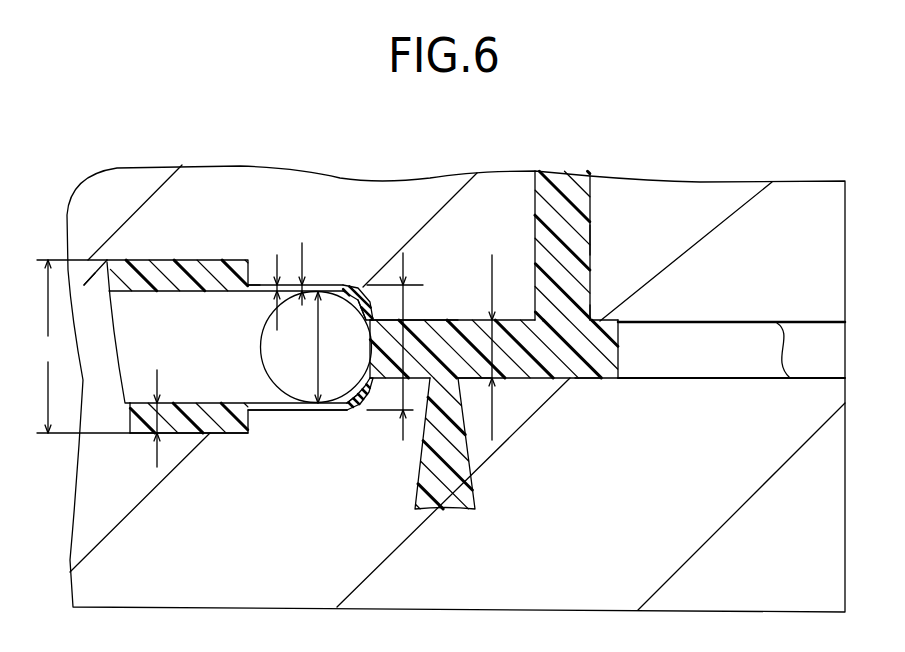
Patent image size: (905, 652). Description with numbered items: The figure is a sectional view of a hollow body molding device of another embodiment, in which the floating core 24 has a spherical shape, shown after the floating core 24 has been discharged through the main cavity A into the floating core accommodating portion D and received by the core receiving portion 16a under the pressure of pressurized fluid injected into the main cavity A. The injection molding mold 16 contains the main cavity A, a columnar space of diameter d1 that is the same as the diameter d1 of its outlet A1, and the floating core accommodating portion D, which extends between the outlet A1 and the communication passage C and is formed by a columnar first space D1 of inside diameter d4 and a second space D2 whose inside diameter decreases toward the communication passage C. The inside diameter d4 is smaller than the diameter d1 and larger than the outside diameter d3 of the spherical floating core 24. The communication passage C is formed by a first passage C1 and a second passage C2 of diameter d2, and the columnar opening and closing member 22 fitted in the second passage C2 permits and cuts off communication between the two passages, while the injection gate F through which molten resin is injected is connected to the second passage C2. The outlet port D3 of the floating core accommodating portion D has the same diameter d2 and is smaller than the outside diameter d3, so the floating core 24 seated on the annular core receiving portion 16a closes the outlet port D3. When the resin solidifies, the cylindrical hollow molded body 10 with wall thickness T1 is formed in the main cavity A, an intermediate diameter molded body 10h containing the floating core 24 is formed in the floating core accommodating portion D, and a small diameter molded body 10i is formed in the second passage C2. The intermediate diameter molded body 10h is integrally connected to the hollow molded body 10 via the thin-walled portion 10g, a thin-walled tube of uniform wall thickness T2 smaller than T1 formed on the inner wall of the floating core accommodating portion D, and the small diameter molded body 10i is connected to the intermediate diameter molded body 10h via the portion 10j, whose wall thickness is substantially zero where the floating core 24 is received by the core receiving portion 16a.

The hollow molded body 10 is at (177, 423).
The thin-walled portion 10g is at (260, 412).
The intermediate diameter molded body 10h is at (350, 400).
The small diameter molded body 10i is at (425, 338).
The portion having a wall thickness of substantially zero 10j is at (372, 314).
The injection molding mold 16 is at (703, 197).
The core receiving portion 16a is at (395, 383).
The opening and closing member 22 is at (713, 350).
The floating core 24 is at (283, 370).
The main cavity A is at (83, 284).
The outlet A1 is at (230, 417).
The communication passage C is at (579, 337).
The first passage C1 is at (582, 247).
The second passage C2 is at (583, 367).
The floating core accommodating portion D is at (250, 318).
The first space D1 is at (297, 267).
The second space D2 is at (373, 385).
The outlet port D3 is at (355, 318).
The injection gate F is at (480, 426).
The wall thickness T1 is at (150, 438).
The wall thickness T2 is at (266, 300).
The diameter d1 is at (83, 346).
The diameter d2 is at (507, 347).
The outside diameter d3 is at (306, 347).
The inside diameter d4 is at (404, 346).